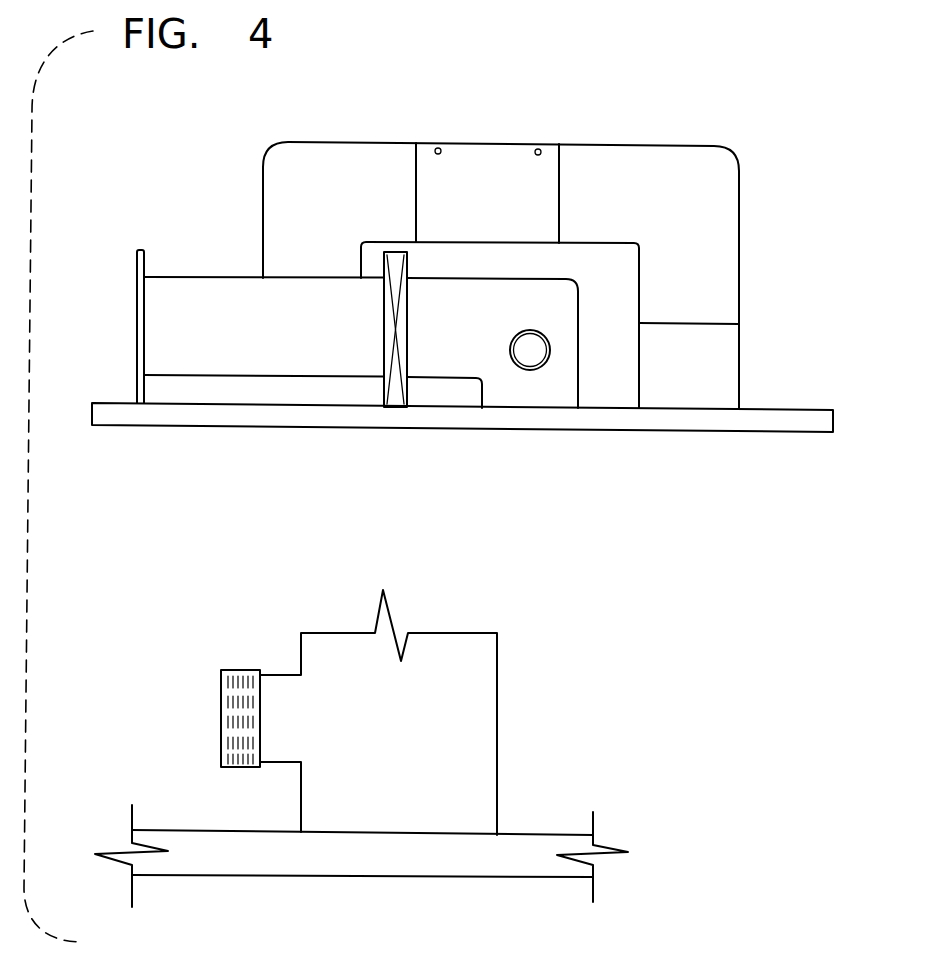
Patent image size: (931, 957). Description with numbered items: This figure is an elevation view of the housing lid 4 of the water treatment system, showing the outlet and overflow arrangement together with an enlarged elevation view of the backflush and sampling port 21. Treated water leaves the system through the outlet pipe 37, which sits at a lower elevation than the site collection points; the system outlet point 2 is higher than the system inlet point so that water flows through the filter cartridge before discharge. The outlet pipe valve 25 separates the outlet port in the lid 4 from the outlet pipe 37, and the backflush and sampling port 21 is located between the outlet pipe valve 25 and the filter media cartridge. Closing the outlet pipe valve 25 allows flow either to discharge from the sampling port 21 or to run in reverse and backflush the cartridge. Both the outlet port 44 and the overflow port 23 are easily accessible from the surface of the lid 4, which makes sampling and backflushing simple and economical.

The system outlet point 2 is at (137, 322).
The housing lid 4 is at (767, 422).
The backflush and sampling port 21 is at (510, 342).
The overflow port 23 is at (722, 356).
The outlet pipe valve 25 is at (393, 330).
The outlet pipe 37 is at (207, 277).
The outlet port 44 is at (528, 382).